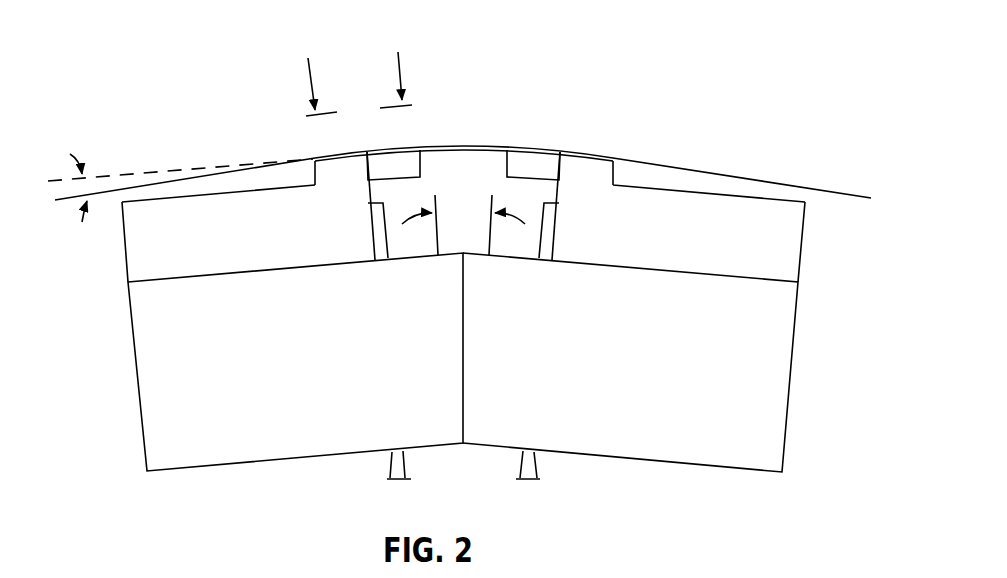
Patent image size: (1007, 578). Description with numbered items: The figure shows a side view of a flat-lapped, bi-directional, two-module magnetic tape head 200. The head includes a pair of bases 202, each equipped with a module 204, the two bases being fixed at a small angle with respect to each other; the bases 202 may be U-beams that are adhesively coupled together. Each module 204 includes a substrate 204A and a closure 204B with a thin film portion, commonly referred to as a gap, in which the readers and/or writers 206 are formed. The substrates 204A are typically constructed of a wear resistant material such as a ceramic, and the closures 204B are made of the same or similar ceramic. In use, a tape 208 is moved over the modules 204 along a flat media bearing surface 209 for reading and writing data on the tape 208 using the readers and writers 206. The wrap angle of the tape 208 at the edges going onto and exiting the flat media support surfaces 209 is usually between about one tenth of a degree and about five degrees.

The two-module magnetic tape head 200 is at (180, 113).
The base 202 is at (134, 350).
The module 204 is at (124, 248).
The substrate 204A is at (188, 225).
The closure 204B is at (507, 167).
The readers and/or writers 206 is at (369, 150).
The tape 208 is at (715, 177).
The media bearing surface 209 is at (320, 153).